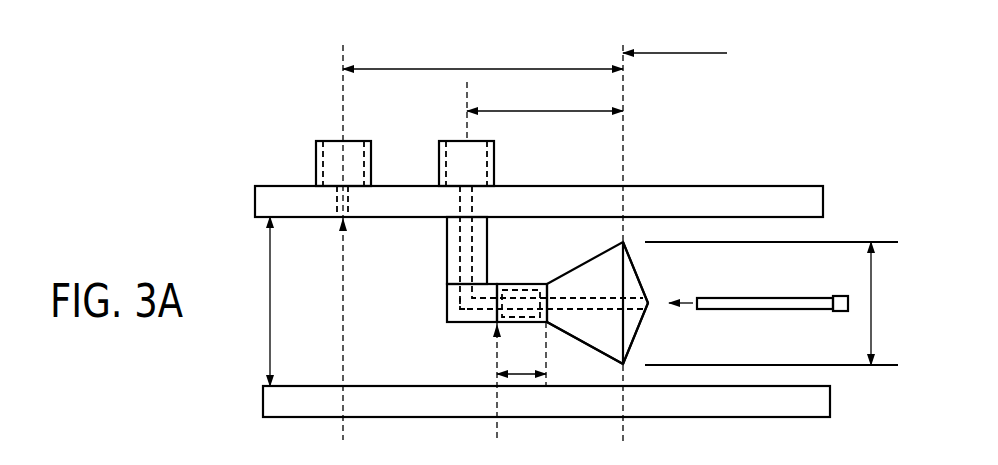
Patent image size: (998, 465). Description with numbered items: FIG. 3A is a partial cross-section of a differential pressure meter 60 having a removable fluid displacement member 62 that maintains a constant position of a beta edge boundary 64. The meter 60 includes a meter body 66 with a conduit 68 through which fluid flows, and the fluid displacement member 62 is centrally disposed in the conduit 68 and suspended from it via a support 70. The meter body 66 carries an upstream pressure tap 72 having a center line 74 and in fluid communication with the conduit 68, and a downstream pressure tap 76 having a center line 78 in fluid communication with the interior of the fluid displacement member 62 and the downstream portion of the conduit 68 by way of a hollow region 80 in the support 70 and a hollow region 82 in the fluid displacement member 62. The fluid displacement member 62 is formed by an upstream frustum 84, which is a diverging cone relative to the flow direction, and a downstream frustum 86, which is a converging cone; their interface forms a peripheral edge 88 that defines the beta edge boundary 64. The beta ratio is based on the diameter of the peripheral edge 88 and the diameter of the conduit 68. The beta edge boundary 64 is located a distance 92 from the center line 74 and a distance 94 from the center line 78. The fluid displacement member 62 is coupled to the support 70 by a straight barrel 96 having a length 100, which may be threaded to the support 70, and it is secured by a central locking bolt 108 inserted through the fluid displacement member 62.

The differential pressure meter 60 is at (816, 101).
The fluid displacement member 62 is at (548, 284).
The beta edge boundary 64 is at (680, 53).
The meter body 66 is at (740, 186).
The conduit 68 is at (305, 348).
The support 70 is at (447, 268).
The upstream pressure tap 72 is at (316, 162).
The center line 74 is at (343, 60).
The downstream pressure tap 76 is at (494, 162).
The center line 78 is at (466, 92).
The hollow region 80 is at (461, 240).
The hollow region 82 is at (470, 312).
The upstream frustum 84 is at (607, 358).
The downstream frustum 86 is at (637, 270).
The peripheral edge 88 is at (623, 325).
The distance 92 is at (483, 67).
The distance 94 is at (515, 111).
The barrel 96 is at (520, 284).
The length 100 is at (525, 372).
The central locking bolt 108 is at (768, 296).